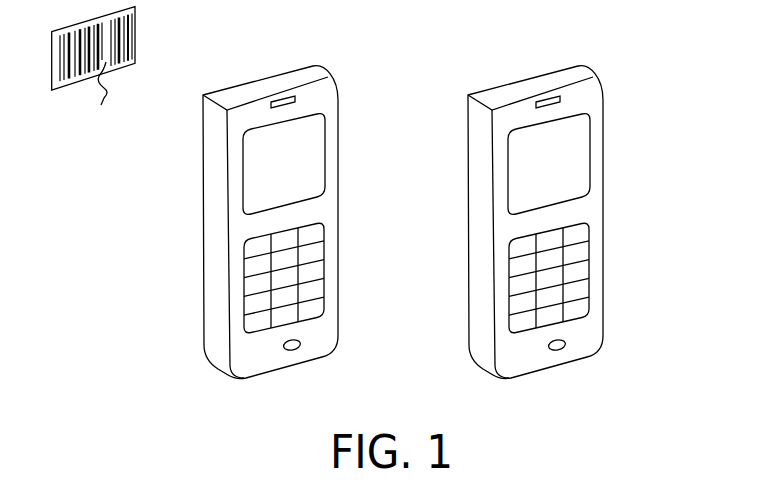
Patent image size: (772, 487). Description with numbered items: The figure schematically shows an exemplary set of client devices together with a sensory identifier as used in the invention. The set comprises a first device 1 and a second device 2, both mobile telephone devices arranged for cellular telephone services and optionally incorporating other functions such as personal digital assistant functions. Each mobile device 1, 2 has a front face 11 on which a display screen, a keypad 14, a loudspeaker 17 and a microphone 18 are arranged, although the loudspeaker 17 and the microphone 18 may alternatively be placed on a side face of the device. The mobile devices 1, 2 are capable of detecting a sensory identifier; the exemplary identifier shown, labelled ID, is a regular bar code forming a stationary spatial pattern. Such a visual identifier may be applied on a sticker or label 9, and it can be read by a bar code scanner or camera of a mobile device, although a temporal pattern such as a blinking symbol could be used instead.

The sticker or label 9 is at (135, 33).
The first device 1 is at (297, 226).
The second device 2 is at (558, 237).
The front face 11 is at (332, 338).
The keypad 14 is at (308, 283).
The loudspeaker 17 is at (293, 99).
The microphone 18 is at (293, 350).